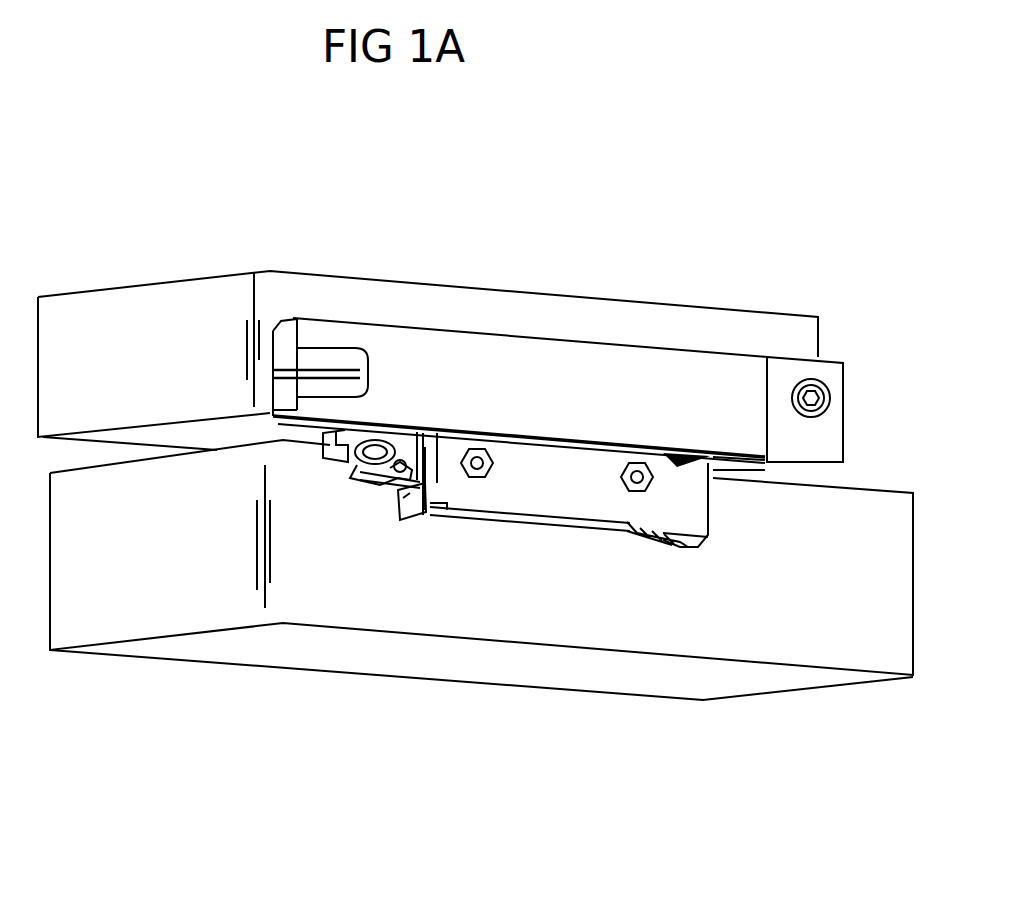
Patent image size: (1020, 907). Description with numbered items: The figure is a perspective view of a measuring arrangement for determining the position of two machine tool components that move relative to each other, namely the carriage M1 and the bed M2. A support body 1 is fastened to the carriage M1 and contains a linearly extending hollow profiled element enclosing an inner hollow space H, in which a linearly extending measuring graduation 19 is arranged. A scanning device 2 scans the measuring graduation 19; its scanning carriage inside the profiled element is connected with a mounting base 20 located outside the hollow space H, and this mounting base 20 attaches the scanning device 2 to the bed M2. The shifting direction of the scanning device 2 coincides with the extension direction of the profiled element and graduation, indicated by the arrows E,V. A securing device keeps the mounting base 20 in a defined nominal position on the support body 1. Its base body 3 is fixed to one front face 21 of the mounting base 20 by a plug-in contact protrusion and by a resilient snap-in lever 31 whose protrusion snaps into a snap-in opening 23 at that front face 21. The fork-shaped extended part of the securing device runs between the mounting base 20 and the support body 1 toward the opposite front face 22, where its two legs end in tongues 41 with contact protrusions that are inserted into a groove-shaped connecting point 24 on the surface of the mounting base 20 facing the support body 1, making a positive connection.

The support body 1 is at (715, 380).
The scanning device 2 is at (480, 513).
The base body 3 is at (330, 487).
The measuring graduation 19 is at (284, 377).
The mounting base 20 is at (563, 498).
The front face 21 is at (400, 513).
The front face 22 is at (712, 503).
The snap-in opening 23 is at (420, 447).
The connecting point 24 is at (712, 457).
The snap-in lever 31 is at (393, 487).
The tongue 41 is at (643, 448).
The inner hollow space H is at (283, 395).
The carriage M1 is at (140, 313).
The bed M2 is at (150, 620).
The extension direction and shifting direction E,V is at (503, 773).